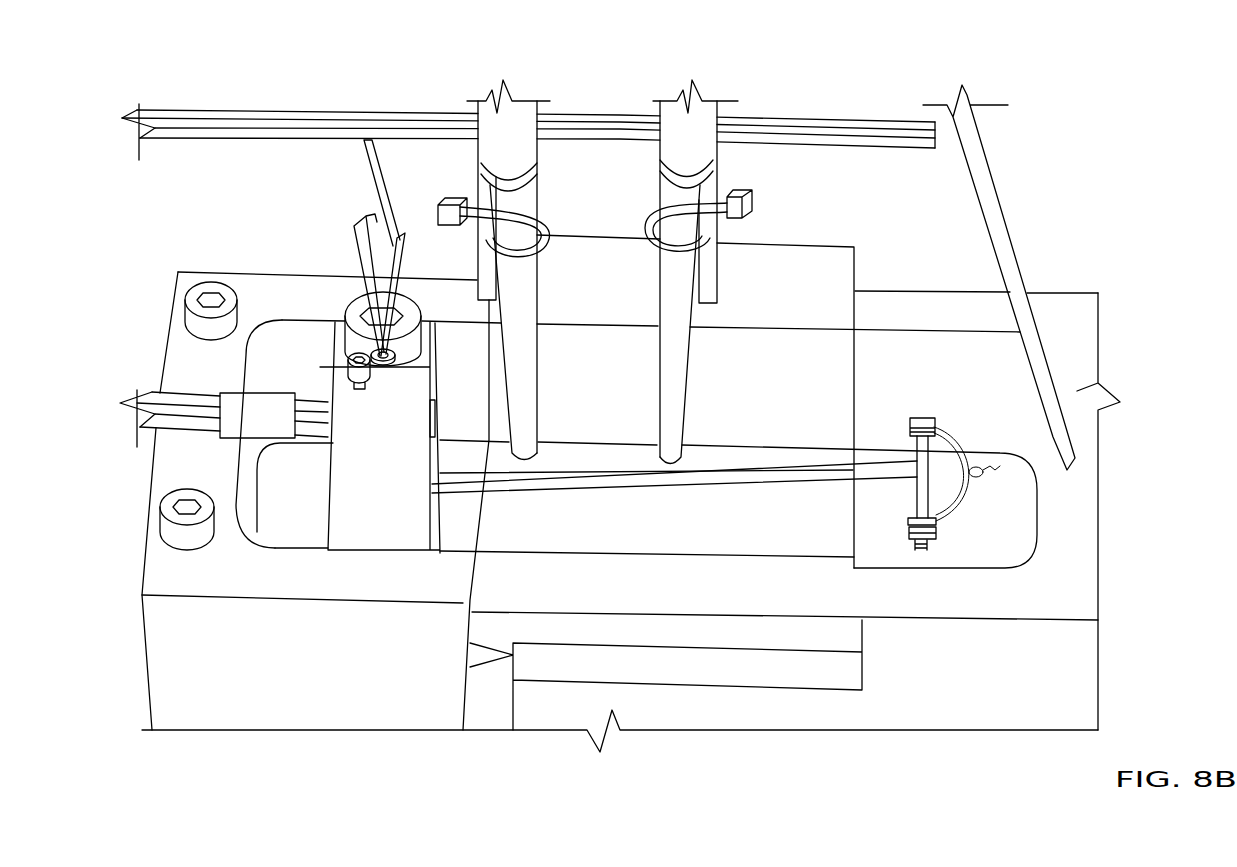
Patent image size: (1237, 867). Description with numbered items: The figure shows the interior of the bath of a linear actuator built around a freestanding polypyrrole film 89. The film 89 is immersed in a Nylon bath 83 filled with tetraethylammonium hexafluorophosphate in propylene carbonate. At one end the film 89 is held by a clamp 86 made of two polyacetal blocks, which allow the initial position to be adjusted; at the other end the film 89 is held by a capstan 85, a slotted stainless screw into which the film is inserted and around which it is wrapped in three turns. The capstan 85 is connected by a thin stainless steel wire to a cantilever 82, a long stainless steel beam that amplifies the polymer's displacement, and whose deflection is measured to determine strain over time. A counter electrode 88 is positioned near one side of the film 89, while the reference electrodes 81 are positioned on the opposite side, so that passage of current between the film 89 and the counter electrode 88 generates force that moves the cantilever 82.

The reference electrodes 81 is at (680, 146).
The cantilever 82 is at (1003, 212).
The bath 83 is at (183, 630).
The capstan 85 is at (910, 433).
The clamp 86 is at (353, 396).
The counter electrode 88 is at (642, 577).
The polypyrrole film 89 is at (770, 473).